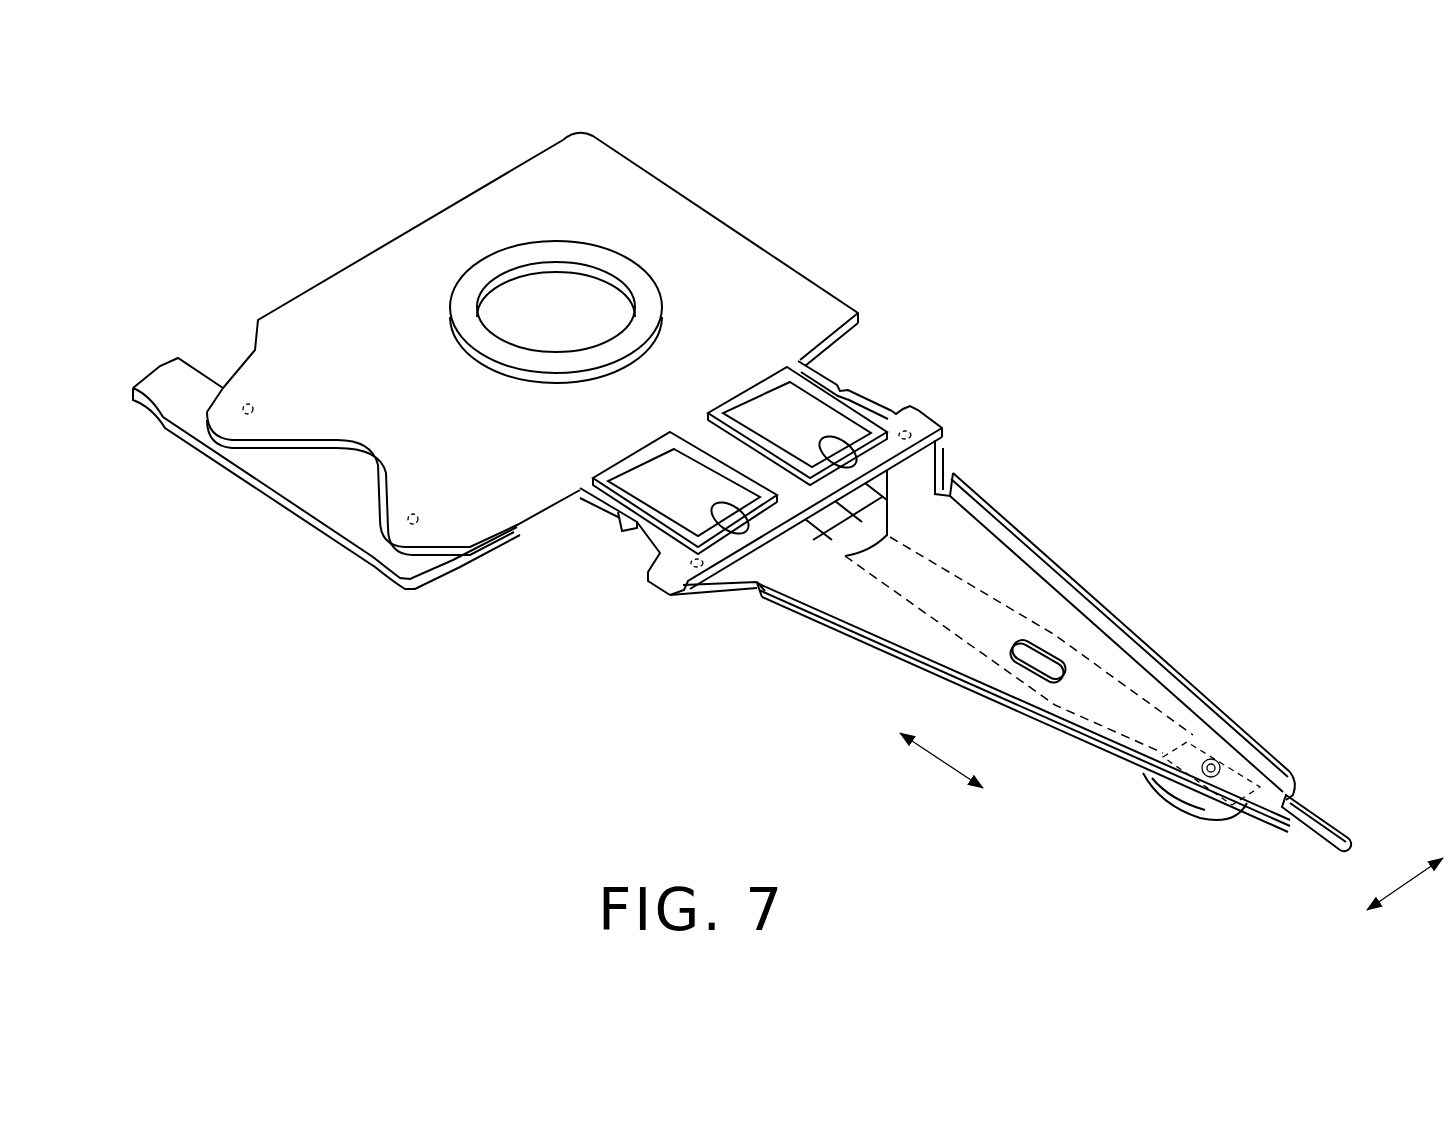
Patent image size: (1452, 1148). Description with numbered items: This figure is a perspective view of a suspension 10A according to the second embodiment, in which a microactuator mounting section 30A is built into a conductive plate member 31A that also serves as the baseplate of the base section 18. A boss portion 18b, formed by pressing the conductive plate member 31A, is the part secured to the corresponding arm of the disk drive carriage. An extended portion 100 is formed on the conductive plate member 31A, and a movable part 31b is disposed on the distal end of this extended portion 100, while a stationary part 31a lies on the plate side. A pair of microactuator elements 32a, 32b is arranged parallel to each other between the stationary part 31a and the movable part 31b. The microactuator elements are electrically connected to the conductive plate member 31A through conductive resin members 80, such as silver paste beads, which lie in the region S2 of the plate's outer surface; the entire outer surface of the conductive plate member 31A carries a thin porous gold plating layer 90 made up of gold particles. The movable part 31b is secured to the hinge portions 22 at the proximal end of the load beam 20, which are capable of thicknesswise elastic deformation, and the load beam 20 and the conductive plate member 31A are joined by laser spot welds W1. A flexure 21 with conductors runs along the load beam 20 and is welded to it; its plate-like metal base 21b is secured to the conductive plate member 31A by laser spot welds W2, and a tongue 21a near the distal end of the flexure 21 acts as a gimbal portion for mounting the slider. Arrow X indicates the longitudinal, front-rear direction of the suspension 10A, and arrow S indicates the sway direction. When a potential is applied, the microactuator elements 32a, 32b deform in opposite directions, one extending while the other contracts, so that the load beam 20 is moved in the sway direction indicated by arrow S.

The suspension 10A is at (963, 127).
The base section 18 is at (785, 252).
The boss portion 18b is at (571, 241).
The metal base 21b is at (293, 484).
The laser spot welds W2 is at (248, 404).
The conductive plate member 31A is at (693, 228).
The region S2 is at (795, 330).
The microactuator mounting section 30A is at (930, 373).
The extended portion 100 is at (777, 483).
The stationary part 31a is at (691, 413).
The movable part 31b is at (813, 510).
The conductive resin members 80 is at (823, 438).
The microactuator element 32a is at (850, 430).
The microactuator element 32b is at (607, 496).
The laser spot welds W1 is at (923, 413).
The hinge portions 22 is at (930, 463).
The thin porous gold plating layer 90 is at (890, 453).
The load beam 20 is at (1100, 653).
The flexure 21 is at (1100, 712).
The tongue 21a is at (1240, 752).
The arrow X is at (940, 758).
The arrow S is at (1408, 887).